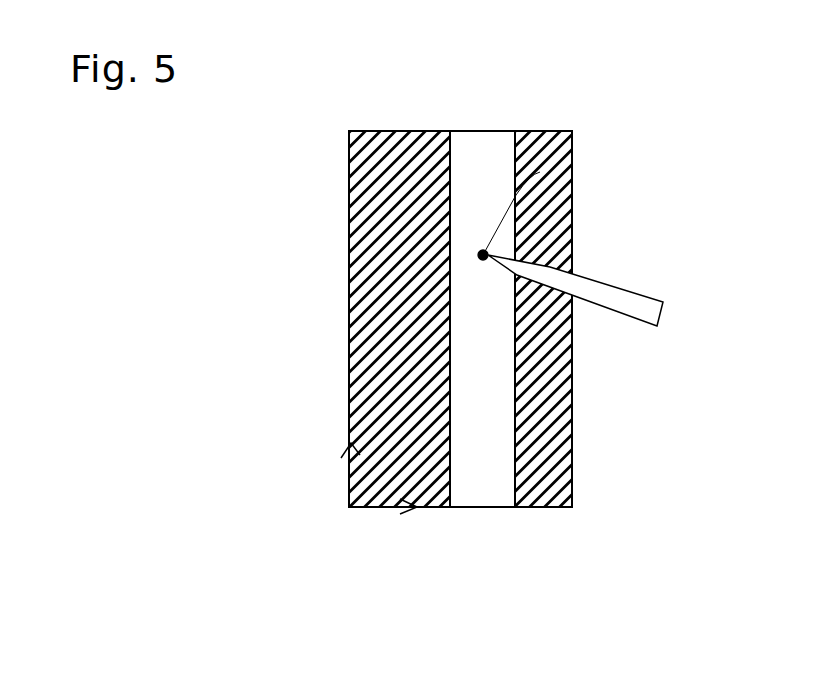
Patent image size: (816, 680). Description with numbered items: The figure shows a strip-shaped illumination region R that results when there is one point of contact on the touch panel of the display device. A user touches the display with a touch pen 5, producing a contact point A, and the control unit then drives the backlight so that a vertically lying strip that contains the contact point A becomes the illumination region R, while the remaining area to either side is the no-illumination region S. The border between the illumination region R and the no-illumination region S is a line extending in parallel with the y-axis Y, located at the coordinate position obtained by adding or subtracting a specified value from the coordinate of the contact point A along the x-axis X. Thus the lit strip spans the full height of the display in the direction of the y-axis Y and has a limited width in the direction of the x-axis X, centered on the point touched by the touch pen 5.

The illumination region R is at (473, 150).
The contact point A is at (540, 172).
The touch pen 5 is at (615, 289).
The no-illumination region S is at (553, 399).
The x-axis X is at (408, 522).
The y-axis Y is at (340, 451).